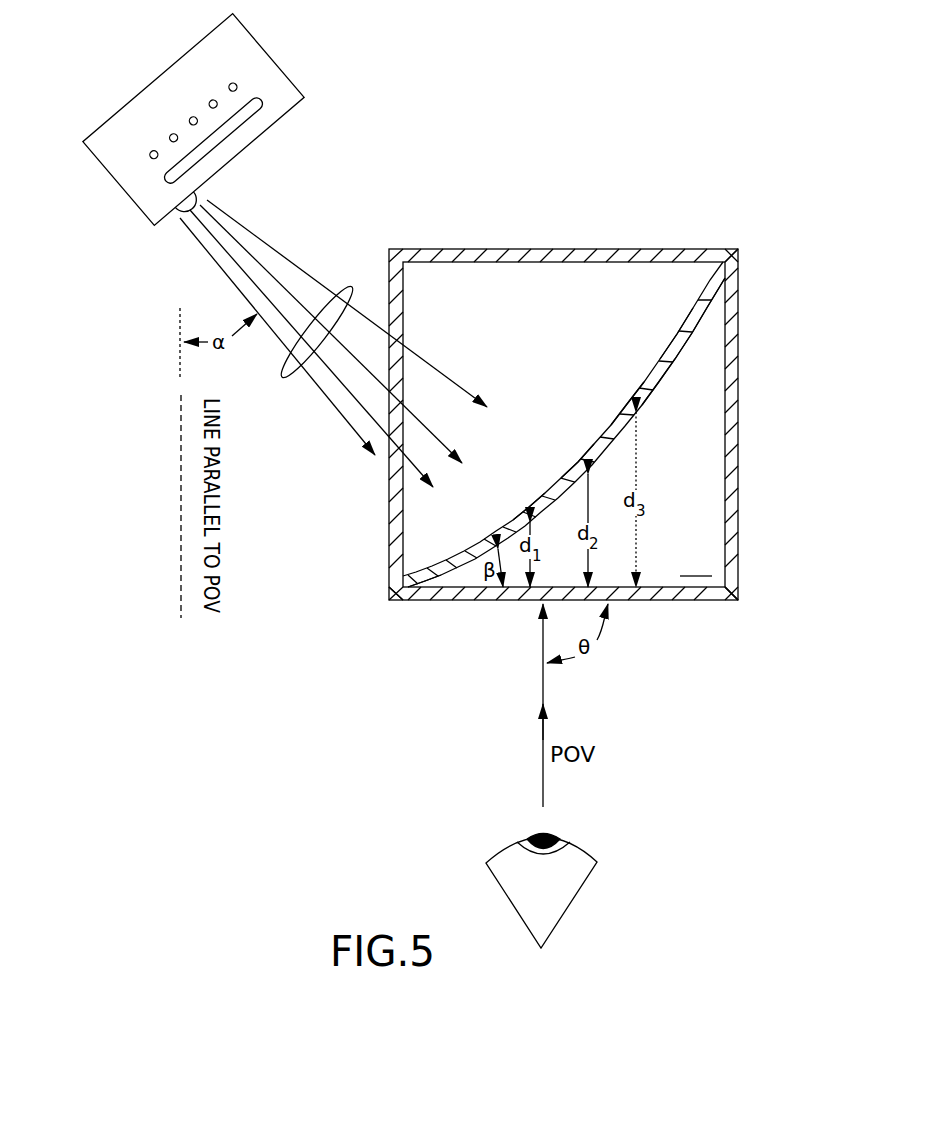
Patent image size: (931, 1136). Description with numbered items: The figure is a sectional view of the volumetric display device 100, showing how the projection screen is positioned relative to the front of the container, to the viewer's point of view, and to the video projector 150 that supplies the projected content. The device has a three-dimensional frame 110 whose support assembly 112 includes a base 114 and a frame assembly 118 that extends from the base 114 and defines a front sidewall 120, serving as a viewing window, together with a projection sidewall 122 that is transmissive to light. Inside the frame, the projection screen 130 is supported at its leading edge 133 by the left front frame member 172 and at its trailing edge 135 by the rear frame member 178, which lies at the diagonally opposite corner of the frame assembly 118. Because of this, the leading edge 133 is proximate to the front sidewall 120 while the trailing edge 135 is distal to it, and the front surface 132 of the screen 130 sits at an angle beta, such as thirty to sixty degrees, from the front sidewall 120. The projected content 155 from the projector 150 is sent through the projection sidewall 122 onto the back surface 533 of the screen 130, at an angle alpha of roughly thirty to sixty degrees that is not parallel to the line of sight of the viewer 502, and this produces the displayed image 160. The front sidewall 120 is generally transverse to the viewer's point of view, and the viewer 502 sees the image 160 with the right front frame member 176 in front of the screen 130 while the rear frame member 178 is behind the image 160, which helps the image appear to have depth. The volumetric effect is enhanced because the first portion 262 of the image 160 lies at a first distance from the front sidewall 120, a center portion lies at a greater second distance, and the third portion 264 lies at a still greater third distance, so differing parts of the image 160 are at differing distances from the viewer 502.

The volumetric display device 100 is at (697, 167).
The 3D frame 110 is at (762, 601).
The support assembly 112 is at (742, 450).
The base 114 is at (696, 566).
The frame assembly 118 is at (722, 603).
The front sidewall 120 is at (665, 602).
The projection sidewall 122 is at (389, 500).
The projection screen 130 is at (668, 432).
The front surface 132 is at (682, 350).
The leading edge 133 is at (440, 578).
The trailing edge 135 is at (712, 307).
The light source 150 is at (272, 50).
The projected content 155 is at (352, 289).
The displayed image 160 is at (577, 471).
The left front frame member 172 is at (389, 598).
The right front frame member 176 is at (741, 588).
The rear frame member 178 is at (740, 263).
The first portion of the displayed image 262 is at (530, 505).
The third portion of the displayed image 264 is at (636, 401).
The viewer 502 is at (576, 893).
The back surface 533 is at (673, 347).